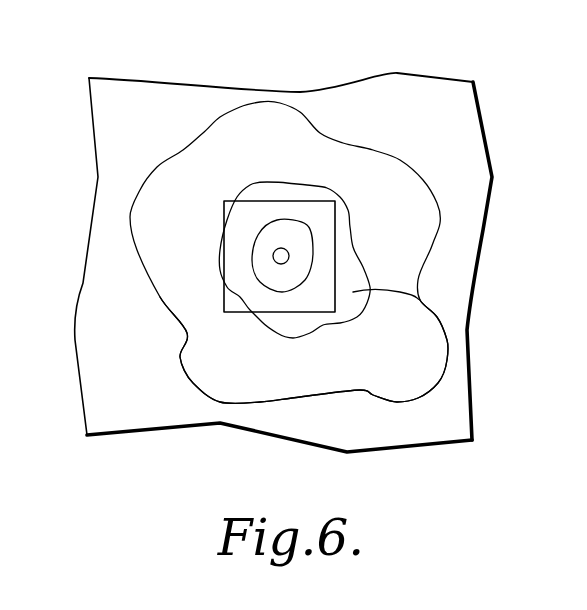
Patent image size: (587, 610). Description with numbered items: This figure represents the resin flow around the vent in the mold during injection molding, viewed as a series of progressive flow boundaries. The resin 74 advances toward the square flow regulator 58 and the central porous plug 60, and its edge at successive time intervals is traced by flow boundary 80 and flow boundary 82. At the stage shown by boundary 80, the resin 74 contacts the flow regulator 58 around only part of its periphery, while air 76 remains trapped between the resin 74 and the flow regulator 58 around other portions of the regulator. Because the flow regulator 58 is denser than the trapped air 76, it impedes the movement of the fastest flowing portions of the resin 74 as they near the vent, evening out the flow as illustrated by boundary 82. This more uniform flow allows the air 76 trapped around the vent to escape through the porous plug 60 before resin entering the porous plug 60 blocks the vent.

The flow regulator 58 is at (233, 302).
The porous plug 60 is at (283, 248).
The resin 74 is at (427, 260).
The air 76 is at (423, 303).
The flow boundary 80 is at (280, 340).
The flow boundary 82 is at (306, 221).